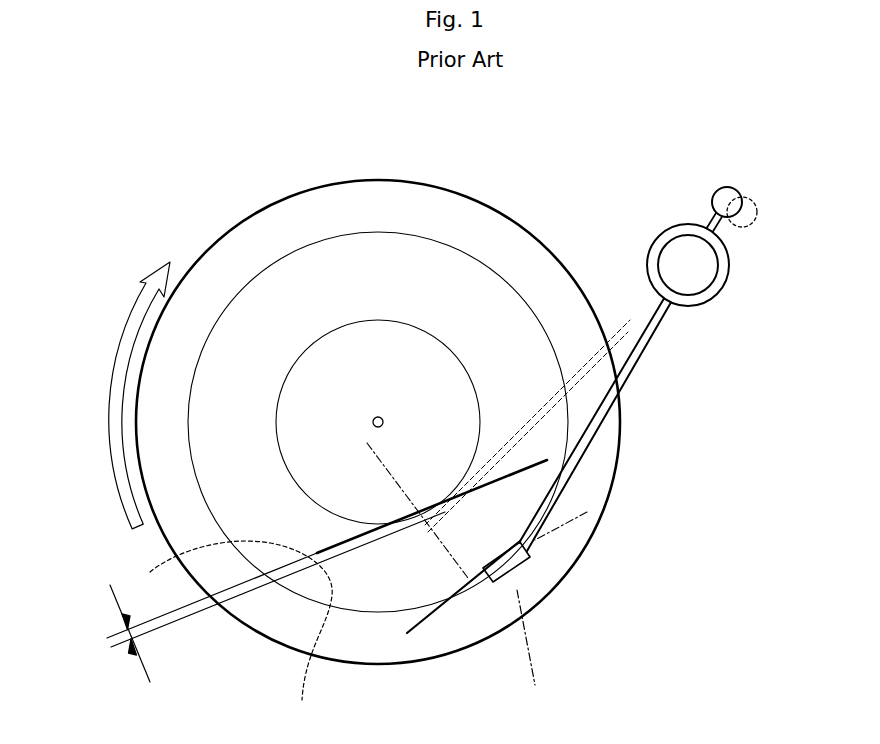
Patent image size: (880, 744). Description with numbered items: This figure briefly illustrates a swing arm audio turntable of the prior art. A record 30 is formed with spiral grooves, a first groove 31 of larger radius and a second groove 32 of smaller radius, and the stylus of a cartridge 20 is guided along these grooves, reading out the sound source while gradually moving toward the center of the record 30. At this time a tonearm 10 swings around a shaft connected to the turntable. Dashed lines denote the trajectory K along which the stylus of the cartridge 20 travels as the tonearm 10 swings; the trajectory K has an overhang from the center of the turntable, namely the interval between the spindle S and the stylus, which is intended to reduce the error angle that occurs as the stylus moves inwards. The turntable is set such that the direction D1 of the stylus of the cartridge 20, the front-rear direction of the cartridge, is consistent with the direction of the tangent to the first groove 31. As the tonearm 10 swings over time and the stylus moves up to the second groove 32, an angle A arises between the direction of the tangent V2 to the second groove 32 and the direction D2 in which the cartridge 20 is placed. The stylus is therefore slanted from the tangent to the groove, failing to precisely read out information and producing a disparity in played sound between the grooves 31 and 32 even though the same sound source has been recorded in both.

The tonearm 10 is at (588, 443).
The cartridge 20 is at (530, 548).
The record 30 is at (411, 182).
The first groove 31 is at (289, 253).
The second groove 32 is at (420, 322).
The spindle S is at (374, 418).
The direction of the stylus D1 is at (437, 608).
The direction in which the cartridge is placed D2 is at (150, 572).
The tangent to the second groove V2 is at (241, 634).
The trajectory K is at (534, 649).
The angle A is at (130, 638).